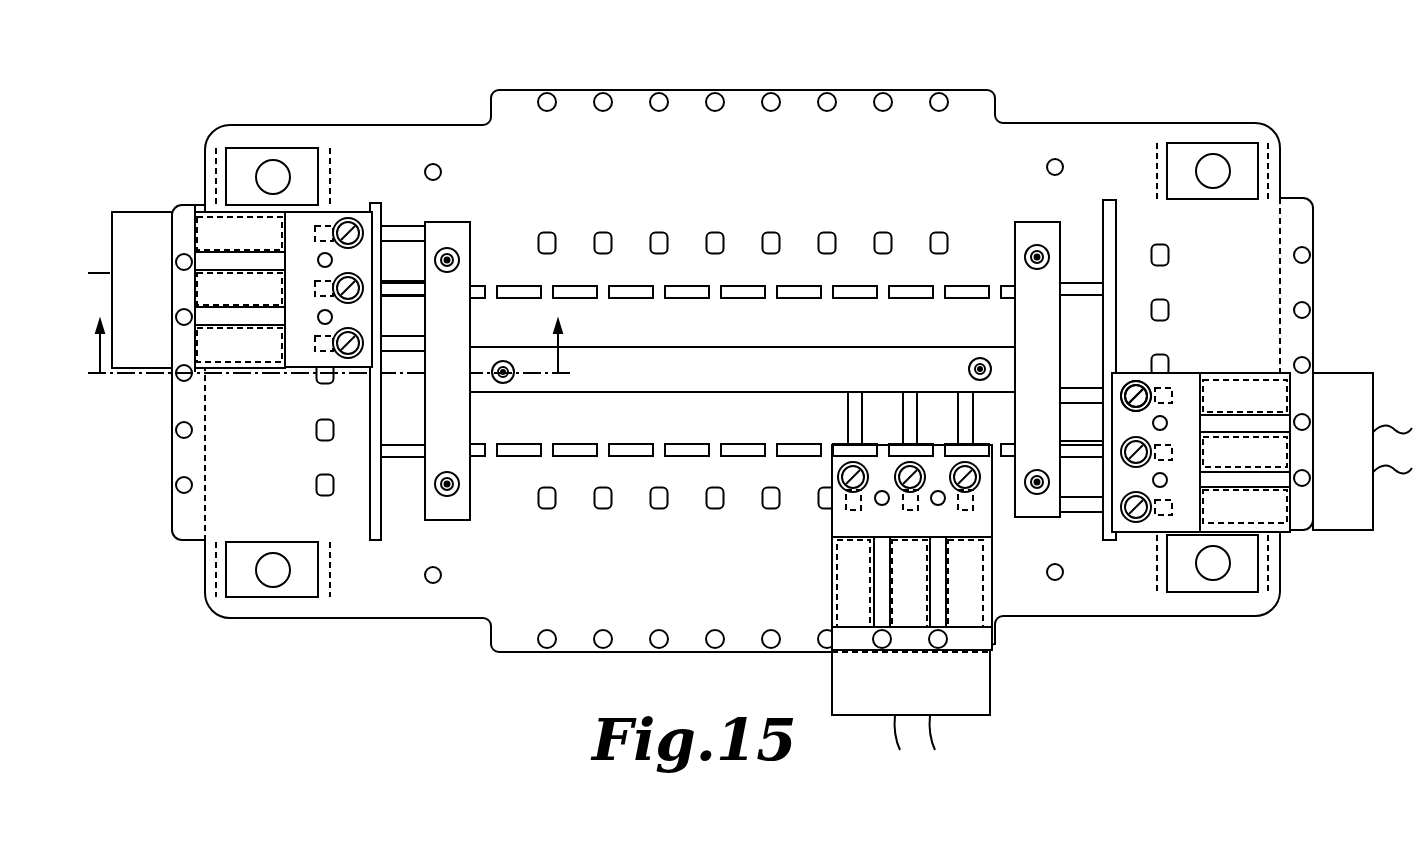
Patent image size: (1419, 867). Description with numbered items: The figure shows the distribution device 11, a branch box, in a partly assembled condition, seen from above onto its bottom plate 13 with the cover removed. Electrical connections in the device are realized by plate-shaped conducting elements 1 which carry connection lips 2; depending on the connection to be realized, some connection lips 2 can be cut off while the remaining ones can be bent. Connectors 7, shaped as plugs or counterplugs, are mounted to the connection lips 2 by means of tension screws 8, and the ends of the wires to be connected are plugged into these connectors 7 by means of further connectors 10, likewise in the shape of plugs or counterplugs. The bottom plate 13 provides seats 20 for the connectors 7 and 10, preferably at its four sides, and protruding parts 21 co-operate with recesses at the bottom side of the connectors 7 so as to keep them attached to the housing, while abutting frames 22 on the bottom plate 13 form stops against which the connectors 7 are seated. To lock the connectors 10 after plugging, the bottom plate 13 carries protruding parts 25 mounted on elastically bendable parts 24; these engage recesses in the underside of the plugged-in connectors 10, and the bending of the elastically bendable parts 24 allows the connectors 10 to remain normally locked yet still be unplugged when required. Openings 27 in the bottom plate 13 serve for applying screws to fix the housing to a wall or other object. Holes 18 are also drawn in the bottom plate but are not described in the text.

The plate-shaped conducting element 1 is at (400, 424).
The connection lips 2 is at (410, 345).
The connectors 7 is at (300, 370).
The tension screws 8 is at (1138, 380).
The connectors 10 is at (128, 226).
The distribution device 11 is at (735, 387).
The bottom plate 13 is at (1003, 140).
The fixing hole 18 is at (442, 172).
The seats 20 is at (829, 148).
The protruding parts 21 is at (708, 246).
The abutting frames 22 is at (822, 300).
The elastically bendable part 24 is at (188, 536).
The protruding parts 25 is at (176, 482).
The openings 27 is at (278, 170).